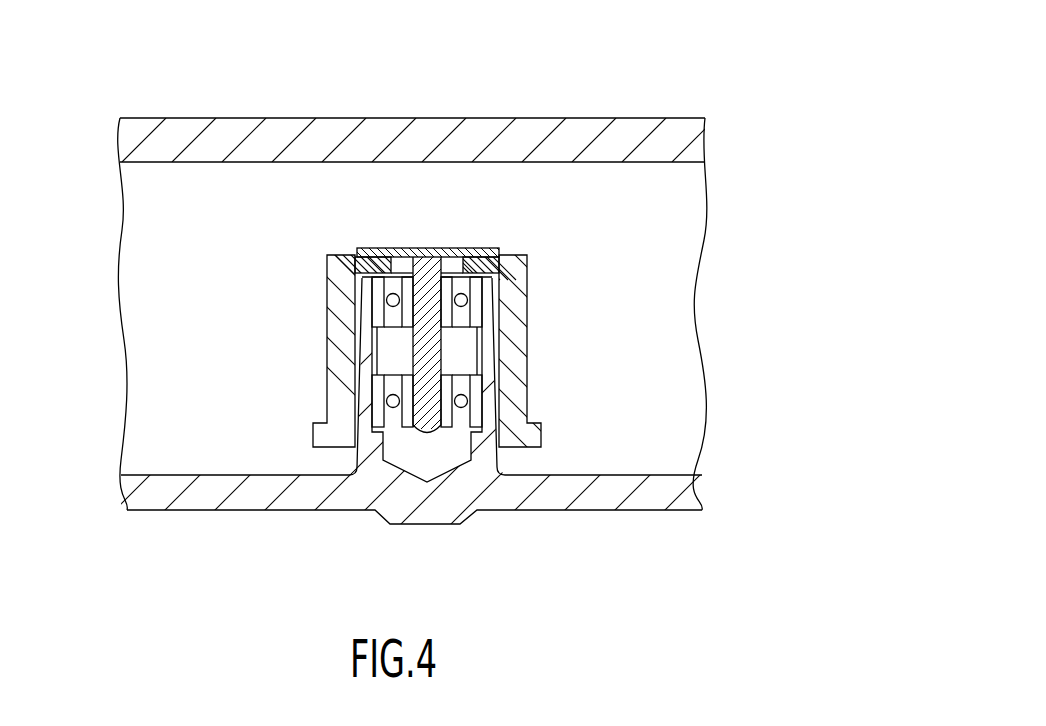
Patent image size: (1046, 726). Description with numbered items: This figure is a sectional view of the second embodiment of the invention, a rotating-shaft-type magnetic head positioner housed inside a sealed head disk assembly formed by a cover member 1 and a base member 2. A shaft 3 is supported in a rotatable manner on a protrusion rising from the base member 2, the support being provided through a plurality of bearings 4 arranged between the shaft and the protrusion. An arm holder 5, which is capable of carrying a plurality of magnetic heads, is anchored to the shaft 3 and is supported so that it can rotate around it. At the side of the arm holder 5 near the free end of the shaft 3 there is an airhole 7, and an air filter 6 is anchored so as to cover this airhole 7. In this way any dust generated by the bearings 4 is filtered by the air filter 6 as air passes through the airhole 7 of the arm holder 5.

The cover member 1 is at (207, 118).
The base member 2 is at (158, 510).
The shaft 3 is at (425, 432).
The bearings 4 is at (447, 428).
The arm holder 5 is at (327, 326).
The air filter 6 is at (480, 247).
The airhole 7 is at (500, 255).